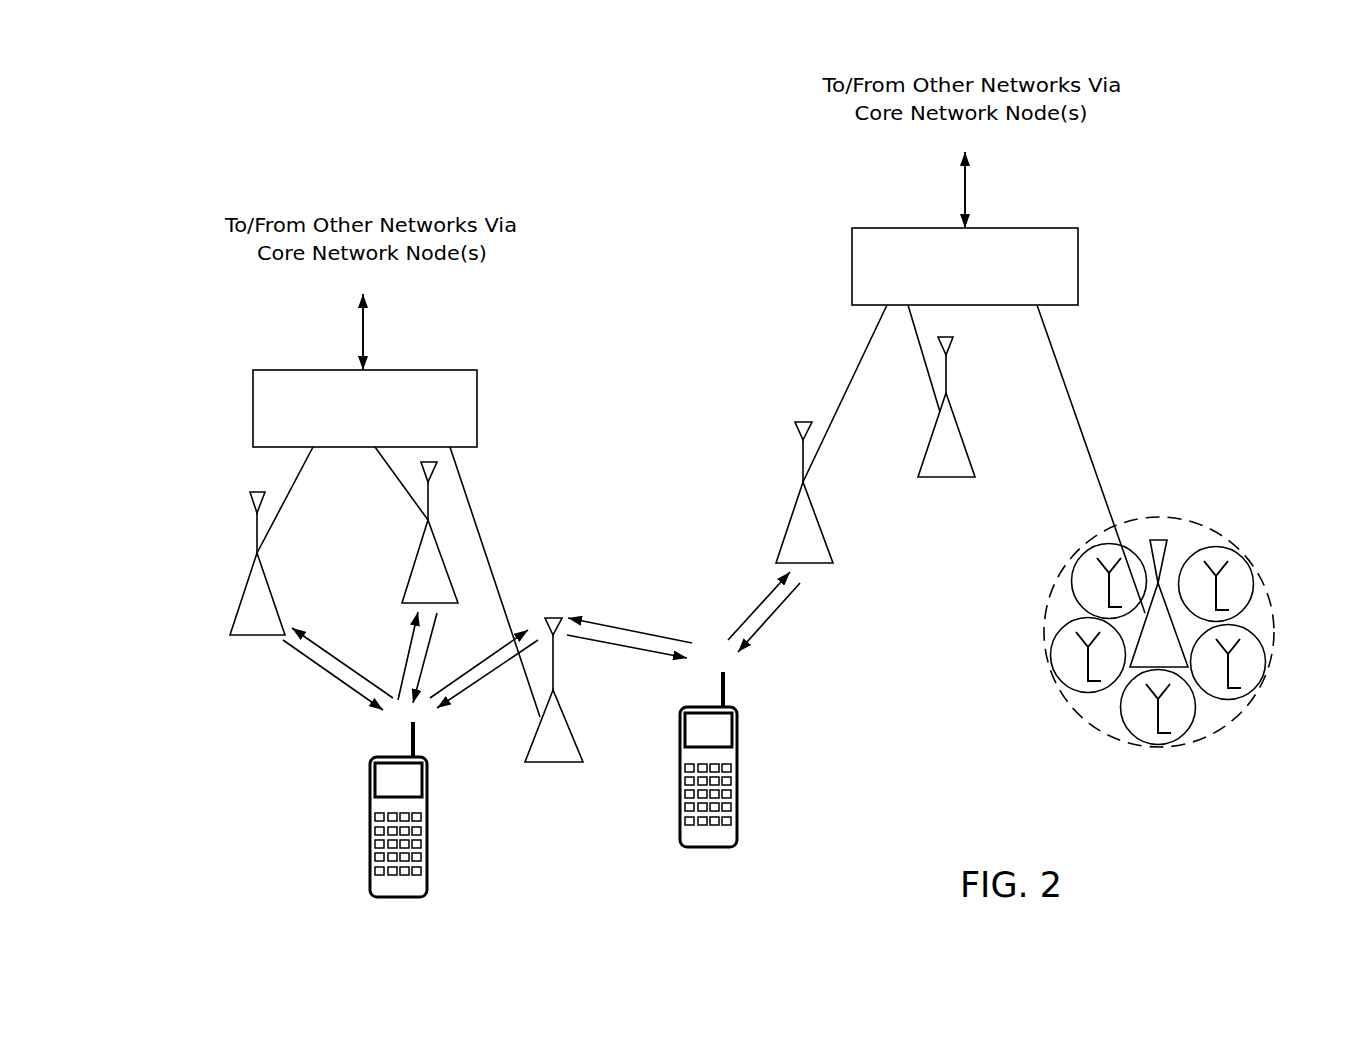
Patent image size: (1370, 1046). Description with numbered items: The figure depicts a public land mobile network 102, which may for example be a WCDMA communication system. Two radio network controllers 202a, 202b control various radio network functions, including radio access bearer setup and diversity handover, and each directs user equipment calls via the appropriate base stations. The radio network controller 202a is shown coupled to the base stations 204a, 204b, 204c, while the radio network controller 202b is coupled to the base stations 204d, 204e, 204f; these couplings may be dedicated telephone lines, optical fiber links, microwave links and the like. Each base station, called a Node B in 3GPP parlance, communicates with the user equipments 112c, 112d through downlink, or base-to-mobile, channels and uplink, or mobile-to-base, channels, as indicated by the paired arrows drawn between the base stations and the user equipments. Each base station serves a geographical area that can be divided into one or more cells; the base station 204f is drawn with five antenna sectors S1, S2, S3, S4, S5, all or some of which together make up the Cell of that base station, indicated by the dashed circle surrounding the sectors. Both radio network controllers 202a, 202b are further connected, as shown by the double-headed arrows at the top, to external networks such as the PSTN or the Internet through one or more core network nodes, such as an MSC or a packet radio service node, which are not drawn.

The public land mobile network 102 is at (613, 198).
The radio network controller 202a is at (477, 414).
The radio network controller 202b is at (1078, 273).
The base station 204a is at (252, 574).
The base station 204b is at (414, 563).
The base station 204c is at (566, 699).
The base station 204d is at (818, 521).
The base station 204e is at (956, 415).
The base station 204f is at (1167, 545).
The user equipment 112c is at (427, 804).
The user equipment 112d is at (737, 755).
The antenna sector S1 is at (1235, 551).
The antenna sector S2 is at (1258, 693).
The antenna sector S3 is at (1196, 724).
The antenna sector S4 is at (1050, 656).
The antenna sector S5 is at (1071, 578).
The cell Cell is at (1268, 586).